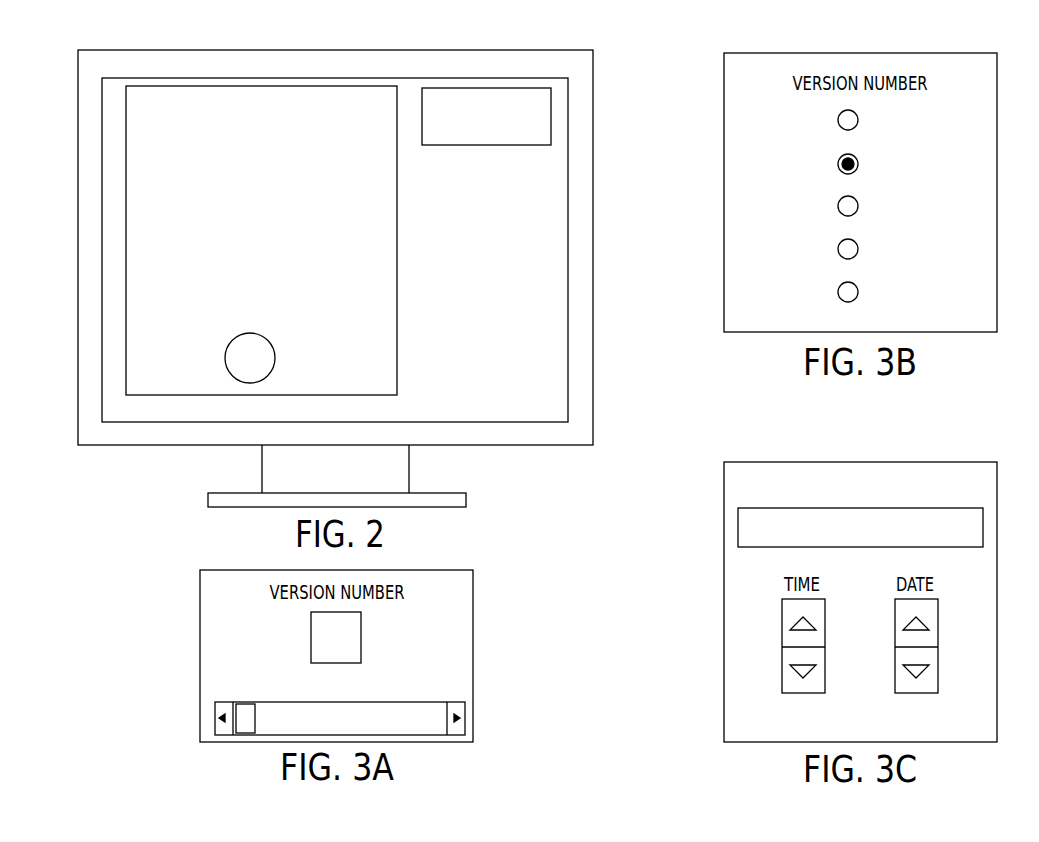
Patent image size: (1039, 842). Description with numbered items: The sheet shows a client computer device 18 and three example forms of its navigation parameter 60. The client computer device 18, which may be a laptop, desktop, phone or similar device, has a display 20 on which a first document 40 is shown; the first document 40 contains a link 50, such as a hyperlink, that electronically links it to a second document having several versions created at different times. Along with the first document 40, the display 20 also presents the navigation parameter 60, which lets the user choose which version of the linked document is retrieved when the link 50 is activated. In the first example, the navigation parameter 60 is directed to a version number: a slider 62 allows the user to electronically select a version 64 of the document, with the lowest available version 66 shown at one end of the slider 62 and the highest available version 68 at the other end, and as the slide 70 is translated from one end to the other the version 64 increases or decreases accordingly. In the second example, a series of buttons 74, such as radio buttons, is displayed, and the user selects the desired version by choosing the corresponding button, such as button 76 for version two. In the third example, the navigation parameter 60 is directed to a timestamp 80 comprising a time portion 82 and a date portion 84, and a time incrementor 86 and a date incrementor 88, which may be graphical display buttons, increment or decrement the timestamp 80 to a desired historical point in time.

In FIG. 2, the client computer device 18 is at (572, 50).
In FIG. 2, the display 20 is at (102, 285).
In FIG. 2, the first document 40 is at (397, 288).
In FIG. 2, the link 50 is at (275, 358).
In FIG. 2, the navigation parameter 60 is at (460, 88).
In FIG. 3B, the navigation parameter 60 is at (724, 181).
In FIG. 3C, the navigation parameter 60 is at (724, 591).
In FIG. 3A, the navigation parameter 60 is at (200, 655).
In FIG. 3A, the slider 62 is at (397, 701).
In FIG. 3A, the version 64 is at (361, 637).
In FIG. 3A, the lowest available version 66 is at (233, 669).
In FIG. 3A, the highest available version 68 is at (457, 680).
In FIG. 3A, the slide 70 is at (243, 730).
In FIG. 3B, the buttons 74 is at (829, 188).
In FIG. 3B, the button 76 is at (838, 164).
In FIG. 3C, the timestamp 80 is at (975, 501).
In FIG. 3C, the time portion 82 is at (773, 491).
In FIG. 3C, the date portion 84 is at (955, 550).
In FIG. 3C, the time incrementor 86 is at (781, 648).
In FIG. 3C, the date incrementor 88 is at (940, 640).